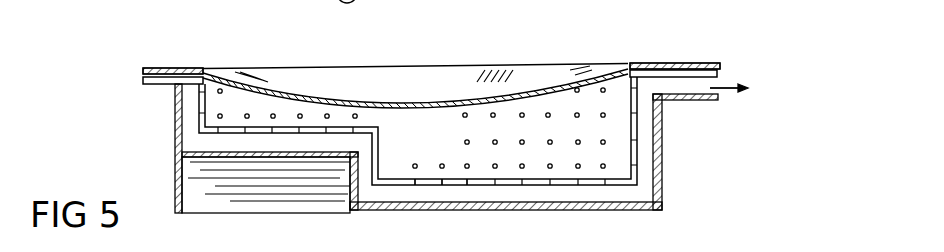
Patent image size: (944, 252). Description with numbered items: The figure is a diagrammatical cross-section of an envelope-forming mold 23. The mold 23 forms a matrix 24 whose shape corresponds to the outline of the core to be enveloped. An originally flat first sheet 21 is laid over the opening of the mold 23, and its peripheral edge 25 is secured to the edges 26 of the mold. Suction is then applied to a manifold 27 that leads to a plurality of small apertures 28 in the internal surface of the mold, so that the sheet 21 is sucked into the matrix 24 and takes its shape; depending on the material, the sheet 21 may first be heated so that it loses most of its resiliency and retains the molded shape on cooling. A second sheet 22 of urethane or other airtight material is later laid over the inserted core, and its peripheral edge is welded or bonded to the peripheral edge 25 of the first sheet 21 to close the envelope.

The first sheet 21 is at (455, 77).
The second sheet 22 is at (446, 168).
The mold 23 is at (182, 190).
The matrix 24 is at (436, 145).
The peripheral edge of the first sheet 25 is at (163, 68).
The edges of the mold 26 is at (162, 80).
The manifold 27 is at (643, 188).
The small apertures 28 is at (417, 185).